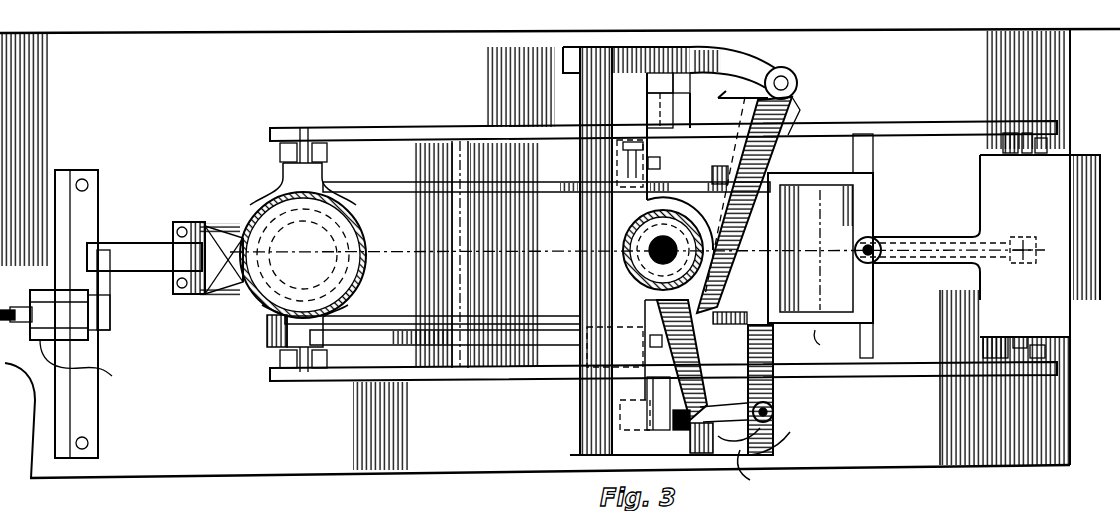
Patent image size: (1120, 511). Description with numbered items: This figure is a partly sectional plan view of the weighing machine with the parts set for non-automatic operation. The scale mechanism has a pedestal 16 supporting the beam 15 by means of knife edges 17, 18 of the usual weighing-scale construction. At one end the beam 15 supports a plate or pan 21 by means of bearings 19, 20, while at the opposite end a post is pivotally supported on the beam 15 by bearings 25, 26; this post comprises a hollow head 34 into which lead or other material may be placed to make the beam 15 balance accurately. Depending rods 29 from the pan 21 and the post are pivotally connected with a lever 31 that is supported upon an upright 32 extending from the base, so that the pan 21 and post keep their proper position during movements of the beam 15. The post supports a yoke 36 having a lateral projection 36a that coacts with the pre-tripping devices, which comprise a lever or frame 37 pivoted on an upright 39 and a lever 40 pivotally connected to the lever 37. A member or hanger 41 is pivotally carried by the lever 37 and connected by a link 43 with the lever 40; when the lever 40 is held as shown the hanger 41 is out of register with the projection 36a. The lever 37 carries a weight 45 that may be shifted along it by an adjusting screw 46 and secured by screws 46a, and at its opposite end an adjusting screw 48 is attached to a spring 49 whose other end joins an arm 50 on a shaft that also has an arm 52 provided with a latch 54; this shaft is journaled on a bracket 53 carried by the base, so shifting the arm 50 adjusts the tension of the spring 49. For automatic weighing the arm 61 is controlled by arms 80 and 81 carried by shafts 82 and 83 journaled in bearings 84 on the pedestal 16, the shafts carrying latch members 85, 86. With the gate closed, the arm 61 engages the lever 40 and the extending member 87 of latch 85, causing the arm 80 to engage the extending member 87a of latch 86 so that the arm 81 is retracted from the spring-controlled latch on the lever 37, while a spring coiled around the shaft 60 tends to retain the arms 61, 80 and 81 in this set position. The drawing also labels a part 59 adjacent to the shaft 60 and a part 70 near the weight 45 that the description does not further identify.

The beam 15 is at (432, 110).
The pedestal 16 is at (585, 268).
The knife edge 17 is at (664, 110).
The knife edge 18 is at (690, 85).
The bearing 19 is at (1042, 153).
The bearing 20 is at (1008, 153).
The plate or pan 21 is at (1026, 153).
The bearing 25 is at (303, 142).
The bearing 26 is at (280, 152).
The depending rod 29 is at (1030, 245).
The lever 31 is at (562, 232).
The upright 32 is at (650, 228).
The hollow head 34 is at (360, 242).
The yoke 36 is at (220, 292).
The lateral projection 36a is at (247, 298).
The lever or frame 37 is at (566, 193).
The upright 39 is at (661, 163).
The lever 40 is at (590, 372).
The member or hanger 41 is at (270, 347).
The link 43 is at (466, 385).
The weight 45 is at (835, 210).
The adjusting screw 46 is at (893, 246).
The screw 46a is at (733, 150).
The adjusting screw 48 is at (742, 312).
The spring 49 is at (115, 250).
The arm 50 is at (110, 302).
The arm 52 is at (89, 366).
The bracket 53 is at (63, 232).
The latch 54 is at (12, 310).
The hub 59 is at (640, 268).
The shaft 60 is at (640, 249).
The arm 61 is at (695, 322).
The roller 70 is at (871, 263).
The arm 80 is at (774, 340).
The arm 81 is at (775, 150).
The shaft 82 is at (775, 412).
The shaft 83 is at (795, 82).
The bearing 84 is at (760, 70).
The latch member 85 is at (756, 441).
The latch member 86 is at (800, 104).
The extending member 87 is at (756, 472).
The extending member 87a is at (737, 106).